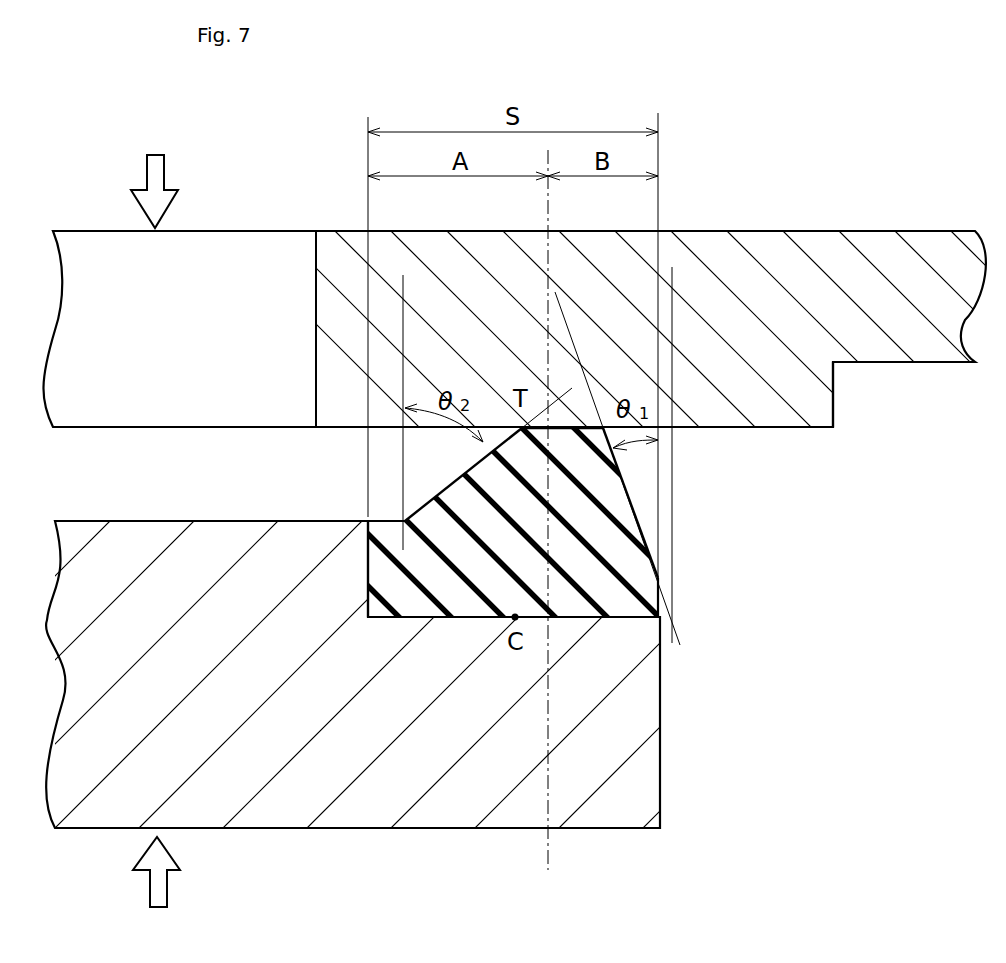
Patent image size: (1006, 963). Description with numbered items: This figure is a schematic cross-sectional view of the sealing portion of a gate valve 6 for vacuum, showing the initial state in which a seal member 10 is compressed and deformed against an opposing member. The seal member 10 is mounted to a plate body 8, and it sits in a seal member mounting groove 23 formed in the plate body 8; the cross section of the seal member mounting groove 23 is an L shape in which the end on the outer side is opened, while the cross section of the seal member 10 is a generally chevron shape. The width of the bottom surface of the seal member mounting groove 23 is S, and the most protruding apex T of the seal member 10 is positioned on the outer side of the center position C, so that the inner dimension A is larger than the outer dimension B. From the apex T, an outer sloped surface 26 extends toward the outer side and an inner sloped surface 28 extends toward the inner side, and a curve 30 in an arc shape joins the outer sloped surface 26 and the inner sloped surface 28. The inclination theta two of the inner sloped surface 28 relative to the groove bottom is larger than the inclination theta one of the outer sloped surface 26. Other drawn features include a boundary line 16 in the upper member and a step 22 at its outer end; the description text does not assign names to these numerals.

The gate valve 6 is at (716, 209).
The plate body 8 is at (617, 740).
The seal member 10 is at (482, 496).
The boundary of upper member 16 is at (316, 306).
The step portion 22 is at (837, 395).
The seal member mounting groove 23 is at (572, 617).
The outer sloped surface 26 is at (632, 498).
The inner sloped surface 28 is at (443, 483).
The curve 30 is at (580, 431).